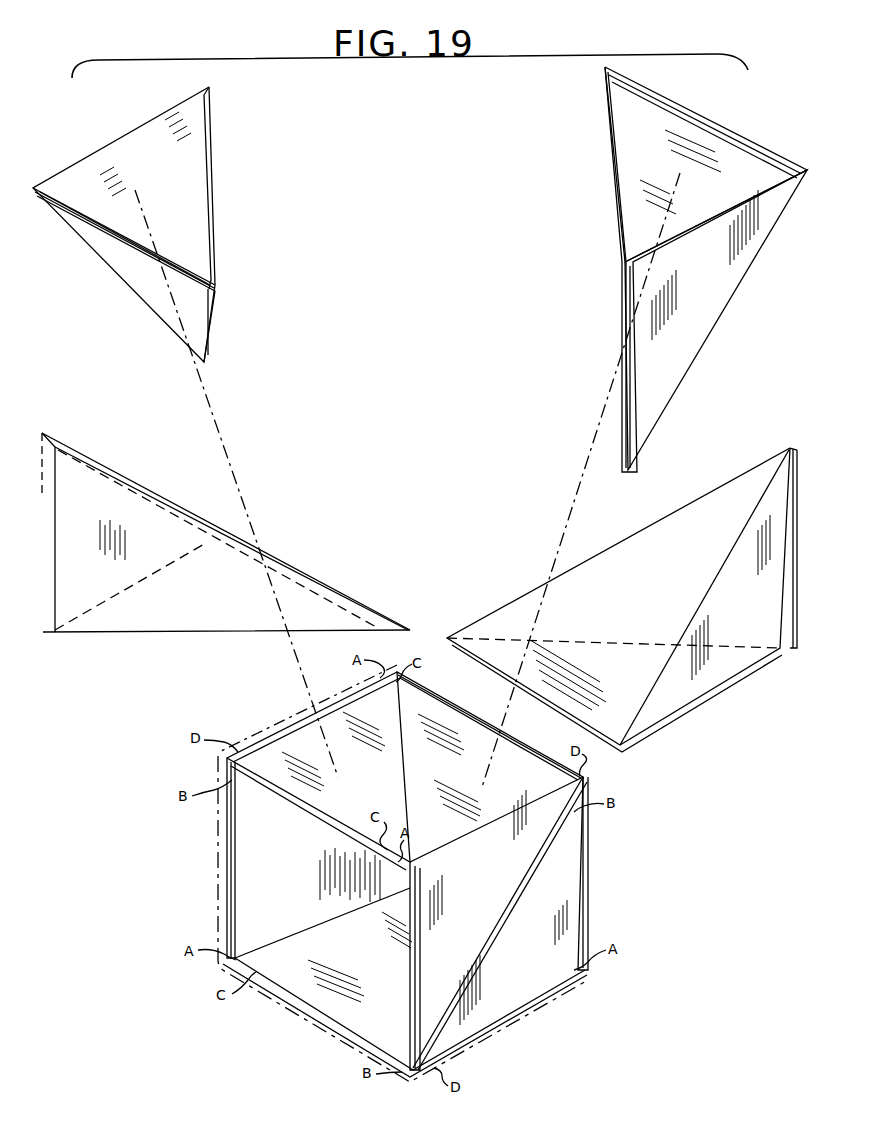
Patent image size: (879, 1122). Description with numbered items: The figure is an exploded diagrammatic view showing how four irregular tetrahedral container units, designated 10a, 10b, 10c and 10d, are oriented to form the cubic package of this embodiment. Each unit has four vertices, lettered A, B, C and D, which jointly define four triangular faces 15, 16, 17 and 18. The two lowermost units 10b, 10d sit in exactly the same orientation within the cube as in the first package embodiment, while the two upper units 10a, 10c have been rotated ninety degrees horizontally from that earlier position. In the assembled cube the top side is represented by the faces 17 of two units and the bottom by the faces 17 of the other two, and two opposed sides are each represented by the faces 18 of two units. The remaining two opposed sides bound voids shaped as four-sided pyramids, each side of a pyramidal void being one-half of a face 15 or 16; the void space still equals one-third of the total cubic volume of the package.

The container unit 10a is at (192, 94).
The container unit 10b is at (58, 448).
The container unit 10c is at (623, 78).
The container unit 10d is at (780, 461).
The triangular face 15 is at (202, 592).
The triangular face 16 is at (654, 597).
The triangular face 17 is at (172, 189).
The triangular face 18 is at (712, 286).